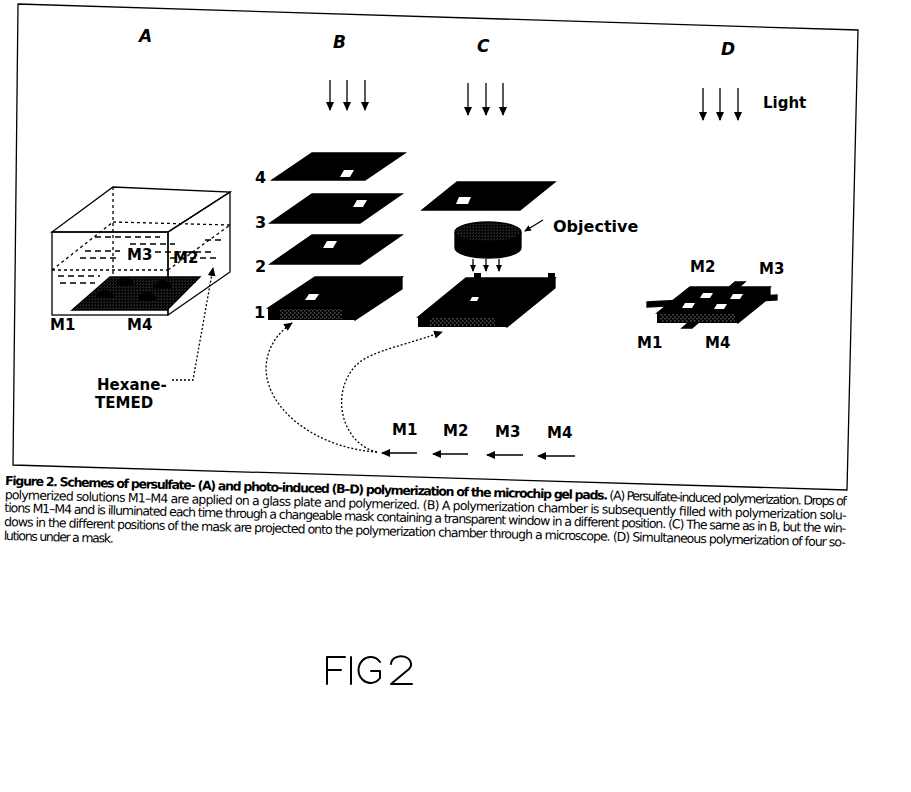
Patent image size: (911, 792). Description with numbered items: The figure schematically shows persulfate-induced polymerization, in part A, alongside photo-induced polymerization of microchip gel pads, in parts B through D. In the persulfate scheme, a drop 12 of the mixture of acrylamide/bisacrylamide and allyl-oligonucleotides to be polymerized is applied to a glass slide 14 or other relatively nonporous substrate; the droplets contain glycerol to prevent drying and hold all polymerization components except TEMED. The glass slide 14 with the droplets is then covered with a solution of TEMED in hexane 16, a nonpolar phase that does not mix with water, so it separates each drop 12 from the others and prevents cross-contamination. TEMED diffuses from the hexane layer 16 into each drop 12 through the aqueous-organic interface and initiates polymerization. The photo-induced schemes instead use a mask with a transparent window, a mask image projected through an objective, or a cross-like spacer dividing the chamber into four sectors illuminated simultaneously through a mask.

The drop 12 is at (110, 303).
The glass slide 14 is at (173, 293).
The solution of TEMED in hexane 16 is at (62, 292).